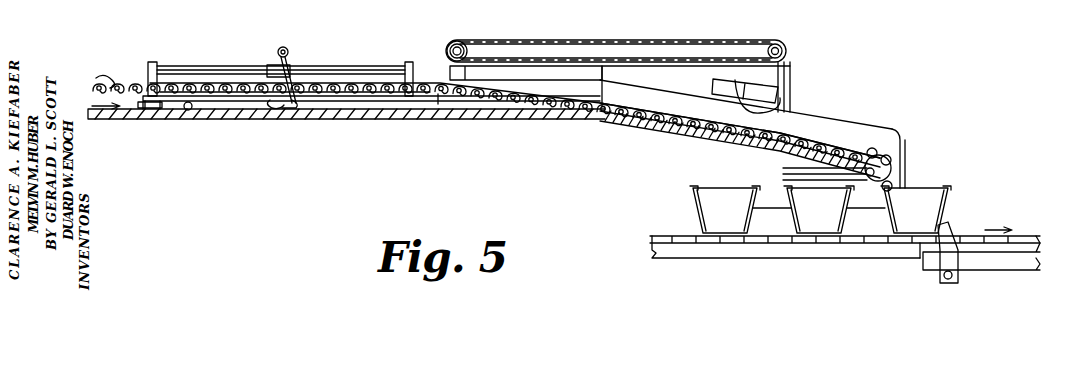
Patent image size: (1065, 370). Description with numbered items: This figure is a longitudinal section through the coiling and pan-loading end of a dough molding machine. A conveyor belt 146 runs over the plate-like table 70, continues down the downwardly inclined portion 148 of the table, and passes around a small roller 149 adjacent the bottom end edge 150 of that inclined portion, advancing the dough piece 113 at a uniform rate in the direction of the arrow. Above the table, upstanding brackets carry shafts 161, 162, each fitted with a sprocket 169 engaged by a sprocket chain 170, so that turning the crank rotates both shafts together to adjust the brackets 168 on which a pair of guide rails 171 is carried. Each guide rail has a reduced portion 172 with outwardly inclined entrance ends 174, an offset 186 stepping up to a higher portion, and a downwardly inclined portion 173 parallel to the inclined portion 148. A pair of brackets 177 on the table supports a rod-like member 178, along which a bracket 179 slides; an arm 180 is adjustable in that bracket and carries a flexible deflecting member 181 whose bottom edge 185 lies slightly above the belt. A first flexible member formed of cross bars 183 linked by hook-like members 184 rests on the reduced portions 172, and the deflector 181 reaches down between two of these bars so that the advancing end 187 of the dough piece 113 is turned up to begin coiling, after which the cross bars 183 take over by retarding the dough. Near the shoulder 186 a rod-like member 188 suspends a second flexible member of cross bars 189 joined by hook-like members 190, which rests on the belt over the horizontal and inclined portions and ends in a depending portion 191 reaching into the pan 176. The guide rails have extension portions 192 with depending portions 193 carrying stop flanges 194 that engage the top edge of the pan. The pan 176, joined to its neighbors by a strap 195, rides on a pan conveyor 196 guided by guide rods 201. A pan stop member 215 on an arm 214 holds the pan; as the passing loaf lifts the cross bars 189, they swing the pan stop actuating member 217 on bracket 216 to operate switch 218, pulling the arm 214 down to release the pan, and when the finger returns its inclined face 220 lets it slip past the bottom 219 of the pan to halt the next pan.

The table or plate-like member 70 is at (245, 120).
The dough piece 113 is at (228, 108).
The conveyor belt 146 is at (163, 120).
The downwardly inclined portion 148 is at (690, 132).
The roller 149 is at (805, 164).
The bottom end edge 150 is at (863, 150).
The shaft 161 is at (783, 46).
The shaft 162 is at (453, 42).
The bracket 168 is at (450, 50).
The sprocket 169 is at (470, 42).
The sprocket chain 170 is at (627, 43).
The guide rails 171 is at (557, 85).
The reduced portion 172 is at (378, 102).
The downwardly inclined portion 173 is at (837, 127).
The outwardly inclined entrance ends 174 is at (152, 108).
The pan 176 is at (890, 185).
The brackets 177 is at (157, 64).
The rod-like member 178 is at (340, 70).
The bracket 179 is at (289, 68).
The arm 180 is at (282, 47).
The flexible deflecting member 181 is at (300, 84).
The cross bars 183 is at (127, 80).
The hook-like members 184 is at (103, 76).
The bottom edge 185 is at (302, 103).
The offset or shoulder 186 is at (434, 102).
The advancing end 187 is at (277, 102).
The rod-like member 188 is at (480, 103).
The cross bars 189 is at (610, 100).
The hook-like members 190 is at (590, 106).
The depending portion 191 is at (905, 175).
The extension portions 192 is at (910, 160).
The depending portion 193 is at (897, 180).
The stop flange 194 is at (905, 180).
The strap 195 is at (692, 202).
The pan conveyor 196 is at (672, 236).
The guide rods 201 is at (712, 253).
The arm 214 is at (1023, 263).
The pan stop member 215 is at (935, 280).
The bracket 216 is at (785, 79).
The pan stop actuating member 217 is at (790, 108).
The switch 218 is at (717, 81).
The bottom of the pan 219 is at (912, 237).
The inclined face 220 is at (945, 228).